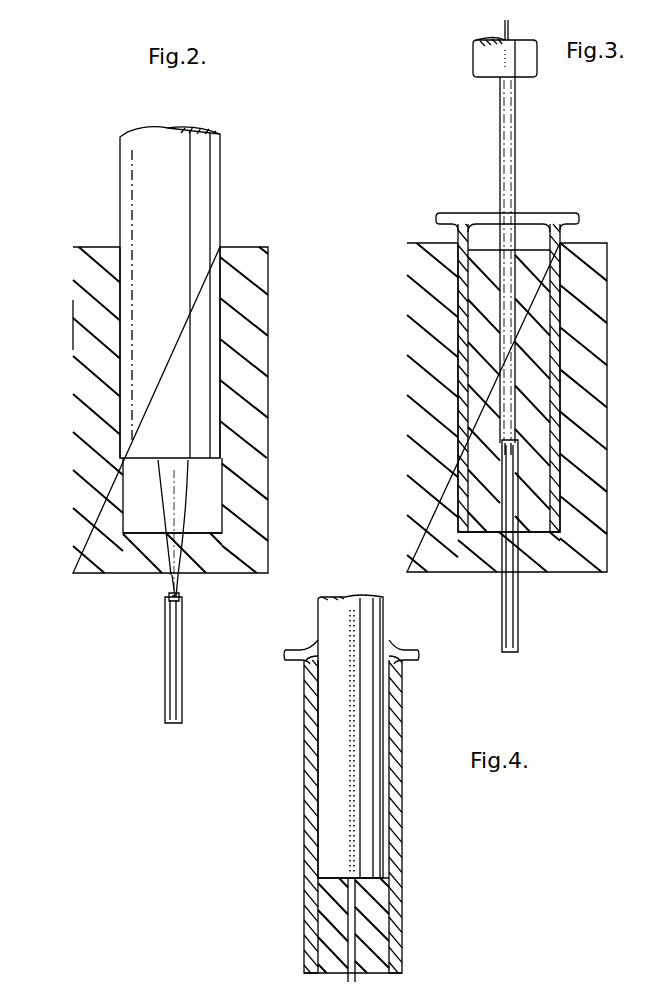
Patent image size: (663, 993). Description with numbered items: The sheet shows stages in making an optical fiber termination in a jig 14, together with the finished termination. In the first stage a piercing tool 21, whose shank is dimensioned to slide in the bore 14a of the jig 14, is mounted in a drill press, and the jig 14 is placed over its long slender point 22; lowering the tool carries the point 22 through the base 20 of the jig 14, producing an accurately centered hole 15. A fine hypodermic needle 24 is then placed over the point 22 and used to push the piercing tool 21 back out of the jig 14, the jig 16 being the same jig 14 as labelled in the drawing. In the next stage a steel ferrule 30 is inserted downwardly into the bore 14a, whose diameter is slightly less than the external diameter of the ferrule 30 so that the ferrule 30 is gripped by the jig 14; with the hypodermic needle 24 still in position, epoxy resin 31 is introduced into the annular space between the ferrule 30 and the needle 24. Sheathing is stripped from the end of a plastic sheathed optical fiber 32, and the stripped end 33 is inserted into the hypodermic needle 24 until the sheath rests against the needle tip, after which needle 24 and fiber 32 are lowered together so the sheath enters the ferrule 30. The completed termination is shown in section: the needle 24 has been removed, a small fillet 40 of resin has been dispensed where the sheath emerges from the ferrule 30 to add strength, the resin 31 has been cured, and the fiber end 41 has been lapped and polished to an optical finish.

In FIG. 2, the jig 14 is at (253, 392).
In FIG. 3, the jig 14 is at (445, 440).
In FIG. 2, the bore of the jig 14a is at (224, 486).
In FIG. 3, the bore of the jig 14a is at (450, 246).
In FIG. 2, the hole 15 is at (181, 552).
In FIG. 3, the hole 15 is at (530, 566).
In FIG. 2, the jig 16 is at (72, 323).
In FIG. 2, the base of the jig 20 is at (157, 545).
In FIG. 3, the base of the jig 20 is at (470, 545).
In FIG. 2, the piercing tool 21 is at (222, 153).
In FIG. 2, the point of the piercing tool 22 is at (178, 598).
In FIG. 2, the hypodermic needle 24 is at (168, 690).
In FIG. 3, the hypodermic needle 24 is at (522, 610).
In FIG. 3, the steel ferrule 30 is at (462, 365).
In FIG. 4, the steel ferrule 30 is at (388, 770).
In FIG. 3, the epoxy resin 31 is at (480, 293).
In FIG. 4, the epoxy resin 31 is at (385, 910).
In FIG. 3, the plastic sheathed optical fiber 32 is at (525, 72).
In FIG. 4, the plastic sheathed optical fiber 32 is at (330, 622).
In FIG. 3, the stripped end of the optical fiber 33 is at (516, 150).
In FIG. 4, the stripped end of the optical fiber 33 is at (360, 843).
In FIG. 4, the fillet of resin 40 is at (310, 660).
In FIG. 4, the fiber end 41 is at (350, 980).